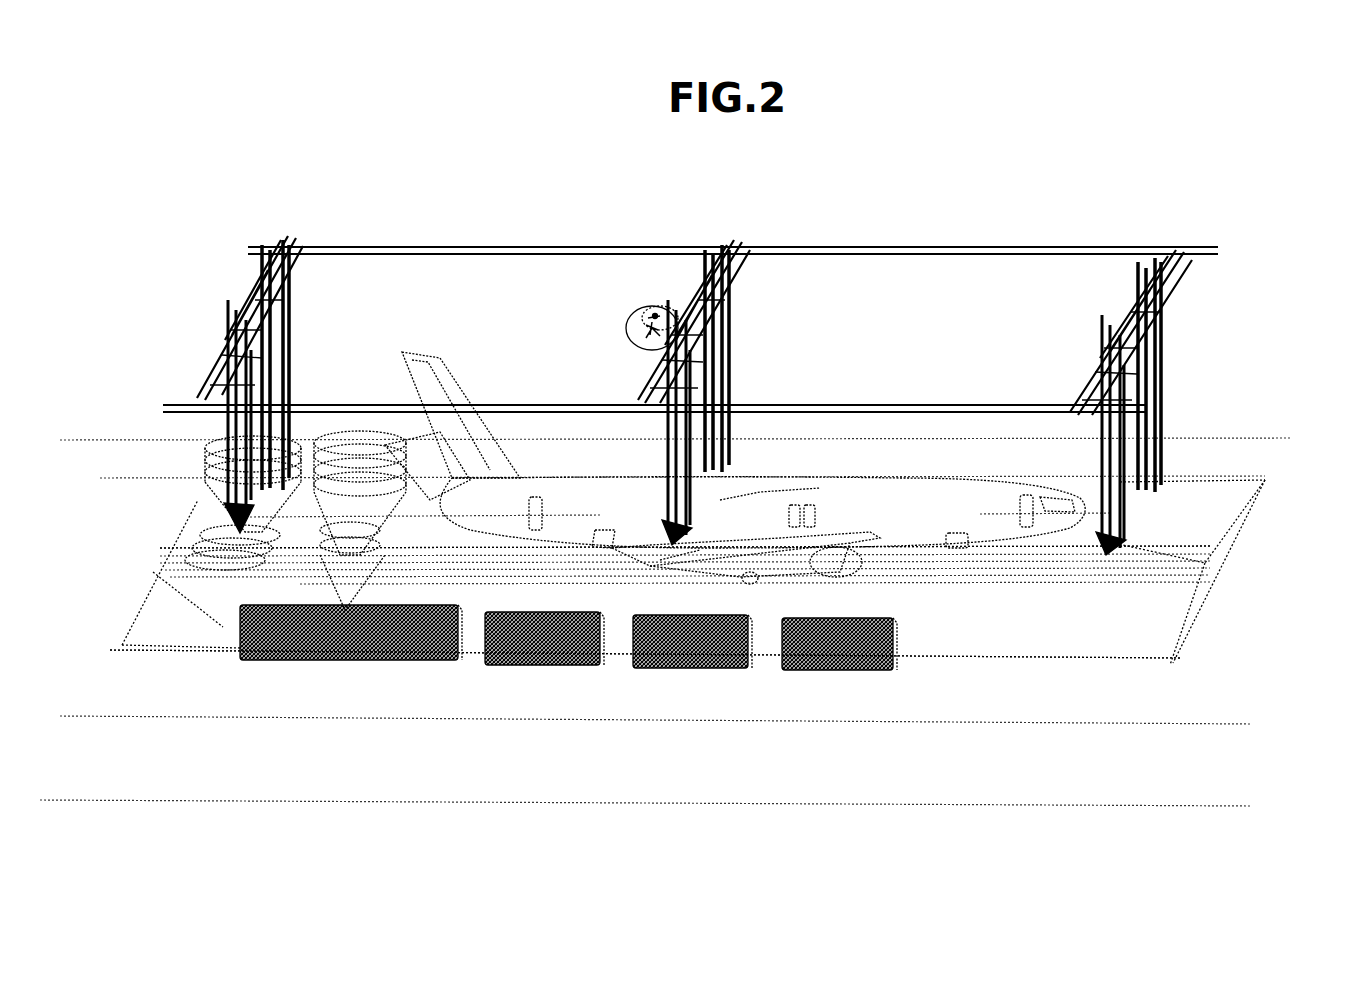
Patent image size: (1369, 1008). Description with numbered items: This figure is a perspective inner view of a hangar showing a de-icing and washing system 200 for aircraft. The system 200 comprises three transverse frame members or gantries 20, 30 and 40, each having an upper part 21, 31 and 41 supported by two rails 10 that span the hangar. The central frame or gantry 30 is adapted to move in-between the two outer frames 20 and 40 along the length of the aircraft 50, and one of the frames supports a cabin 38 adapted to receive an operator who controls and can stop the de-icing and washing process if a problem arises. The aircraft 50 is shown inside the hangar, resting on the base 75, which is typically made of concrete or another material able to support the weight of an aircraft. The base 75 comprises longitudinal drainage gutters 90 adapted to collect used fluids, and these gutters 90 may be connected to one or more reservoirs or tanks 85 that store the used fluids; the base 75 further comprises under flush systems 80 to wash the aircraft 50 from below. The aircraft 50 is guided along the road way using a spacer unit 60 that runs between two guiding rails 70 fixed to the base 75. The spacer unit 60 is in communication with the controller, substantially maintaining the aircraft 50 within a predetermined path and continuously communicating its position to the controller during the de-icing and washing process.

The de-icing and washing system 200 is at (500, 210).
The rails 10 is at (876, 408).
The first transverse frame member 20 is at (308, 233).
The upper part of first frame member 21 is at (253, 275).
The second transverse frame member 30 is at (748, 238).
The upper part of second frame member 31 is at (707, 260).
The cabin 38 is at (633, 323).
The third transverse frame member 40 is at (1180, 245).
The upper part of third frame member 41 is at (1137, 275).
The aircraft 50 is at (925, 528).
The spacer unit 60 is at (1070, 567).
The guiding rails 70 is at (1188, 575).
The base 75 is at (190, 520).
The under flush systems 80 is at (417, 443).
The reservoirs or tanks 85 is at (847, 655).
The longitudinal drainage gutters 90 is at (925, 577).